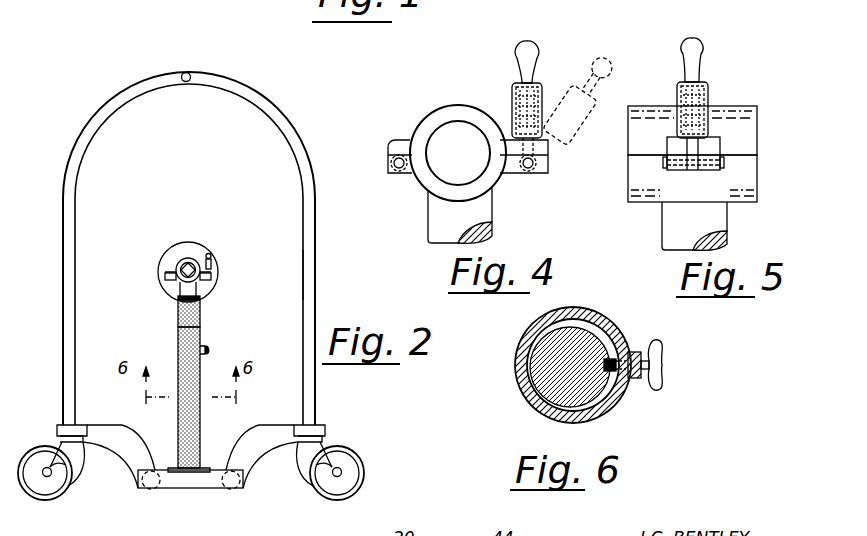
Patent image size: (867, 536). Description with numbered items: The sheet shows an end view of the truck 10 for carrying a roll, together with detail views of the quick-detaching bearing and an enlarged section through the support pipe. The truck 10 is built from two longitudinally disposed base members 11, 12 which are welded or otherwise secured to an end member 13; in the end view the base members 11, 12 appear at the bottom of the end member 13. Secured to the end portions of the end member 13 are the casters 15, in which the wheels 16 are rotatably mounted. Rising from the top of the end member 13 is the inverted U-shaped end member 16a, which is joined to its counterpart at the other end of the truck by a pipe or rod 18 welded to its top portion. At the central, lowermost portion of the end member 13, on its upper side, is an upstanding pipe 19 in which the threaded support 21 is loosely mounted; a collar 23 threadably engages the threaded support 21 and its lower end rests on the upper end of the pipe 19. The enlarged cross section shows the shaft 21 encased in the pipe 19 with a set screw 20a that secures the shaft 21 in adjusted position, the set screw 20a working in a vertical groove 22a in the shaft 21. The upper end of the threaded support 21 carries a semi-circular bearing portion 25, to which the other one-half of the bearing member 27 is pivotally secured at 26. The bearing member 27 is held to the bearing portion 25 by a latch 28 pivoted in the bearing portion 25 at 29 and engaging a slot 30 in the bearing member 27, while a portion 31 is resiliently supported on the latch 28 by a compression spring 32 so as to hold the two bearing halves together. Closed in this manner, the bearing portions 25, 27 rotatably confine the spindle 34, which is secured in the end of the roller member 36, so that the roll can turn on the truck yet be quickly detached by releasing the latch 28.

In FIG. 2, the truck 10 is at (266, 115).
In FIG. 2, the pipe or rod 18 is at (198, 74).
In FIG. 2, the inverted U-shaped end member 16a is at (318, 292).
In FIG. 2, the end member 13 is at (128, 424).
In FIG. 2, the base member 12 is at (148, 490).
In FIG. 2, the base member 11 is at (221, 490).
In FIG. 2, the caster 15 is at (78, 452).
In FIG. 2, the wheel 16 is at (57, 492).
In FIG. 2, the upstanding pipe 19 is at (178, 440).
In FIG. 6, the upstanding pipe 19 is at (522, 405).
In FIG. 2, the collar 23 is at (202, 312).
In FIG. 2, the set screw 20a is at (210, 350).
In FIG. 6, the set screw 20a is at (668, 370).
In FIG. 6, the vertical groove 22a is at (606, 355).
In FIG. 2, the roller member 36 is at (160, 264).
In FIG. 2, the threaded support 21 is at (197, 290).
In FIG. 4, the threaded support 21 is at (446, 215).
In FIG. 5, the threaded support 21 is at (728, 233).
In FIG. 6, the threaded support 21 is at (547, 352).
In FIG. 2, the bearing member 27 is at (188, 258).
In FIG. 4, the bearing member 27 is at (471, 110).
In FIG. 5, the bearing member 27 is at (758, 116).
In FIG. 2, the spindle 34 is at (186, 264).
In FIG. 2, the pivot 26 is at (165, 277).
In FIG. 4, the pivot 26 is at (398, 170).
In FIG. 2, the pivot 29 is at (212, 276).
In FIG. 4, the pivot 29 is at (532, 170).
In FIG. 5, the pivot 29 is at (665, 160).
In FIG. 2, the portion 31 is at (212, 265).
In FIG. 4, the portion 31 is at (514, 84).
In FIG. 5, the portion 31 is at (709, 88).
In FIG. 2, the latch 28 is at (213, 255).
In FIG. 4, the latch 28 is at (528, 52).
In FIG. 5, the latch 28 is at (697, 50).
In FIG. 2, the semi-circular bearing portion 25 is at (178, 288).
In FIG. 4, the semi-circular bearing portion 25 is at (492, 178).
In FIG. 5, the semi-circular bearing portion 25 is at (744, 179).
In FIG. 4, the compression spring 32 is at (548, 97).
In FIG. 5, the compression spring 32 is at (710, 100).
In FIG. 5, the slot 30 is at (702, 152).